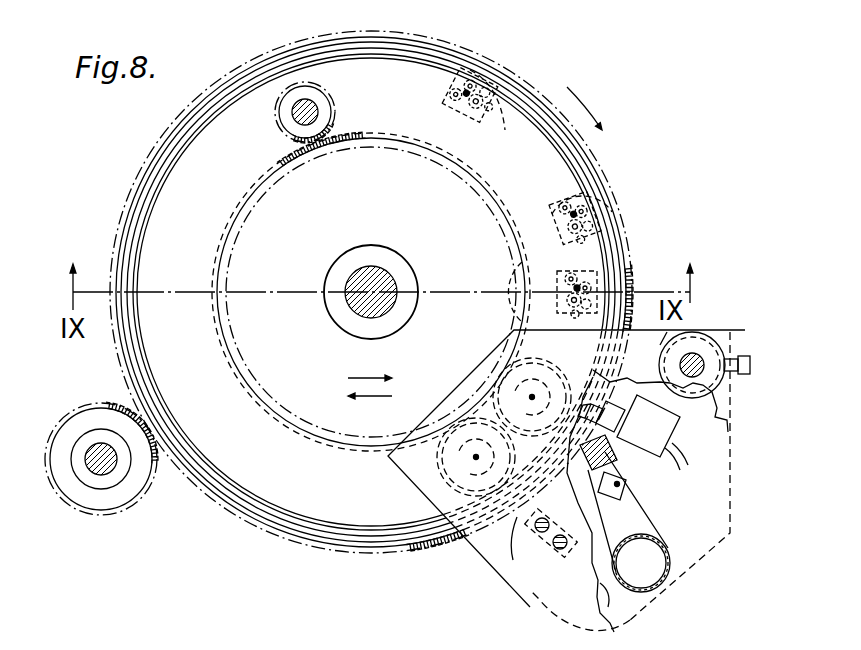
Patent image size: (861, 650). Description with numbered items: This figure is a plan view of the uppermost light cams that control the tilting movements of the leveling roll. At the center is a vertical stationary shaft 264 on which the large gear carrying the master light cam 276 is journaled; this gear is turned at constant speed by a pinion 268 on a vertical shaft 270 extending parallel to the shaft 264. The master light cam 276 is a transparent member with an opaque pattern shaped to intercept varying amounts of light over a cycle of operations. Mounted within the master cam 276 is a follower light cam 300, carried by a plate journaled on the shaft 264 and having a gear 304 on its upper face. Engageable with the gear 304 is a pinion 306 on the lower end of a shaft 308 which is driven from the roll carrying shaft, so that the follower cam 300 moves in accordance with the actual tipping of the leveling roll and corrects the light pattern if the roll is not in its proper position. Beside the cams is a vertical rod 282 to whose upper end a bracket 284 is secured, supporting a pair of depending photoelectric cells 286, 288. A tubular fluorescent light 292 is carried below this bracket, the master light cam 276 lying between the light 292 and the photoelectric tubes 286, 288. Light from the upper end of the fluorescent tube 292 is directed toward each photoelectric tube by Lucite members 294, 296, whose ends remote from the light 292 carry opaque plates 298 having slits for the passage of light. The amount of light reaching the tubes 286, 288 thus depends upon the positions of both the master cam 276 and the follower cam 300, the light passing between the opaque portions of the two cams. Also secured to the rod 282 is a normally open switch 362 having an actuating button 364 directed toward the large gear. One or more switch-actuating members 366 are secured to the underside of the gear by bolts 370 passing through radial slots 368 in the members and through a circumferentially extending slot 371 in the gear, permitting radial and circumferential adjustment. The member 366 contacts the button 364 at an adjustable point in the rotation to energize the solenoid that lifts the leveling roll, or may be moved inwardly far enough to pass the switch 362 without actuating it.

The vertical stationary shaft 264 is at (363, 282).
The pinion 268 is at (143, 468).
The vertical shaft 270 is at (93, 467).
The master light cam 276 is at (152, 410).
The vertical rod 282 is at (703, 333).
The bracket 284 is at (530, 607).
The photoelectric cell 286 is at (455, 430).
The photoelectric cell 288 is at (507, 368).
The tubular fluorescent light 292 is at (670, 573).
The Lucite member 294 is at (603, 585).
The Lucite member 296 is at (658, 520).
The opaque plate 298 is at (537, 522).
The follower light cam 300 is at (188, 432).
The gear 304 is at (375, 136).
The pinion 306 is at (320, 120).
The shaft 308 is at (296, 115).
The switch 362 is at (672, 425).
The actuating button 364 is at (652, 392).
The switch-actuating member 366 is at (626, 285).
The radial slot 368 is at (615, 265).
The bolt 370 is at (567, 200).
The circumferentially extending slot 371 is at (468, 72).